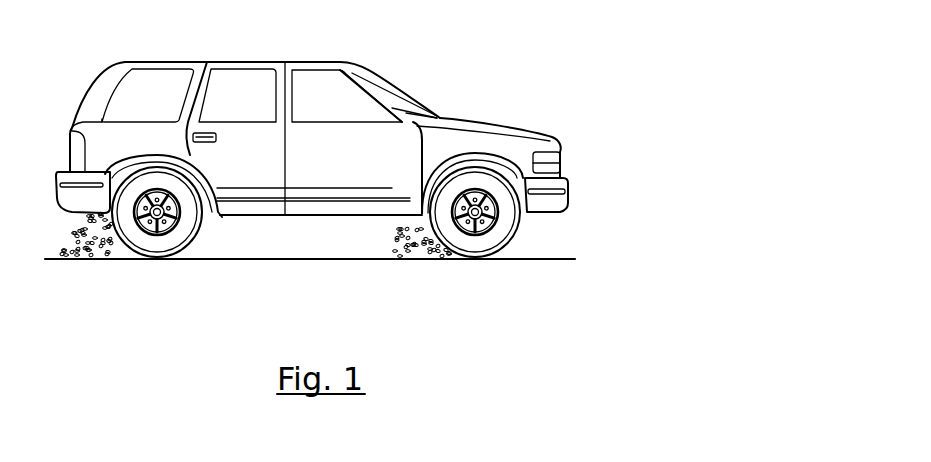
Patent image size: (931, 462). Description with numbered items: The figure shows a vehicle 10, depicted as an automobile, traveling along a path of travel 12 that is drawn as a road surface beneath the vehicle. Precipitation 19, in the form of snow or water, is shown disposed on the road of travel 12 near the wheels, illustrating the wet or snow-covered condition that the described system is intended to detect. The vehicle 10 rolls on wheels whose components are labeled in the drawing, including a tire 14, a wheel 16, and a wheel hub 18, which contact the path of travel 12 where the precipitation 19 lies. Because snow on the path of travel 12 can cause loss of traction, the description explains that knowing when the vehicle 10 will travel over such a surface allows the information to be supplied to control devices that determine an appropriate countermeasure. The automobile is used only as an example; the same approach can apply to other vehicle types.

The vehicle 10 is at (339, 168).
The path of travel 12 is at (202, 259).
The tire 14 is at (477, 259).
The wheel 16 is at (502, 240).
The wheel hub 18 is at (493, 212).
The precipitation 19 is at (422, 250).